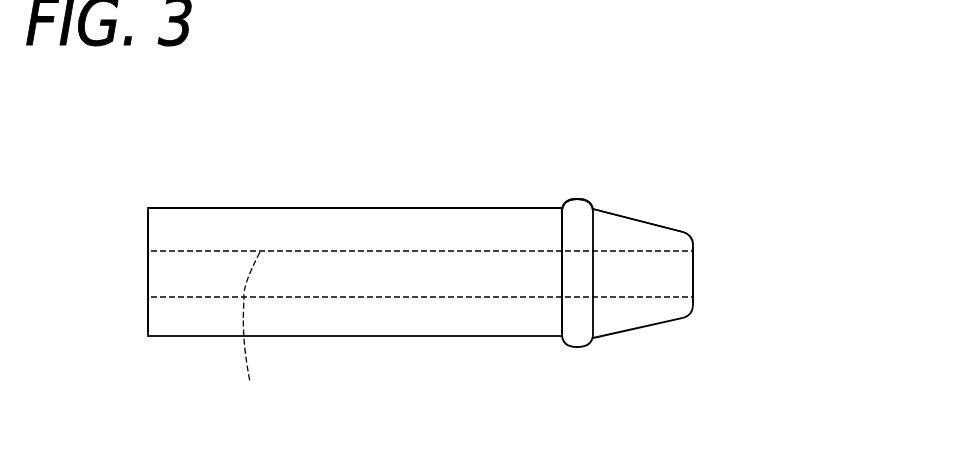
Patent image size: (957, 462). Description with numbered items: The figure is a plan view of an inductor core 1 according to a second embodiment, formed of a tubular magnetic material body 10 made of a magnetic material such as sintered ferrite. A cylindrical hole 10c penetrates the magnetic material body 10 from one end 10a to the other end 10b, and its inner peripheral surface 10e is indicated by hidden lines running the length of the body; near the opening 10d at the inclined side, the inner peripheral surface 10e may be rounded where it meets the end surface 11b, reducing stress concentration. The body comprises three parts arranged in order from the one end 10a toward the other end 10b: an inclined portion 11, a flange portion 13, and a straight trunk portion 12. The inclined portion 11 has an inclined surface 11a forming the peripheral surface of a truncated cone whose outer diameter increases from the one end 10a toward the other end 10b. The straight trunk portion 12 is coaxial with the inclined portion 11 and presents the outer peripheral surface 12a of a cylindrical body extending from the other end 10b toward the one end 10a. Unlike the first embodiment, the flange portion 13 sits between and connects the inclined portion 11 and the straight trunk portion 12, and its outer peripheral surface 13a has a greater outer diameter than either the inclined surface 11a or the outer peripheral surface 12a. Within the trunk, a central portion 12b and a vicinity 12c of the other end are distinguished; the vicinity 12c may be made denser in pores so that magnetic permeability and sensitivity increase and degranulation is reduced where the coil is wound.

The inductor core 1 is at (702, 100).
The magnetic material body 10 is at (274, 222).
The one end 10a is at (693, 263).
The other end 10b is at (148, 276).
The cylindrical hole 10c is at (180, 252).
The opening 10d is at (693, 292).
The inner peripheral surface 10e is at (258, 337).
The inclined portion 11 is at (647, 315).
The inclined surface 11a is at (636, 218).
The end surface 11b is at (693, 247).
The straight trunk portion 12 is at (203, 318).
The outer peripheral surface 12a is at (335, 208).
The central portion 12b is at (444, 208).
The vicinity of the other end 12c is at (185, 208).
The flange portion 13 is at (583, 328).
The outer peripheral surface of the flange portion 13a is at (576, 200).